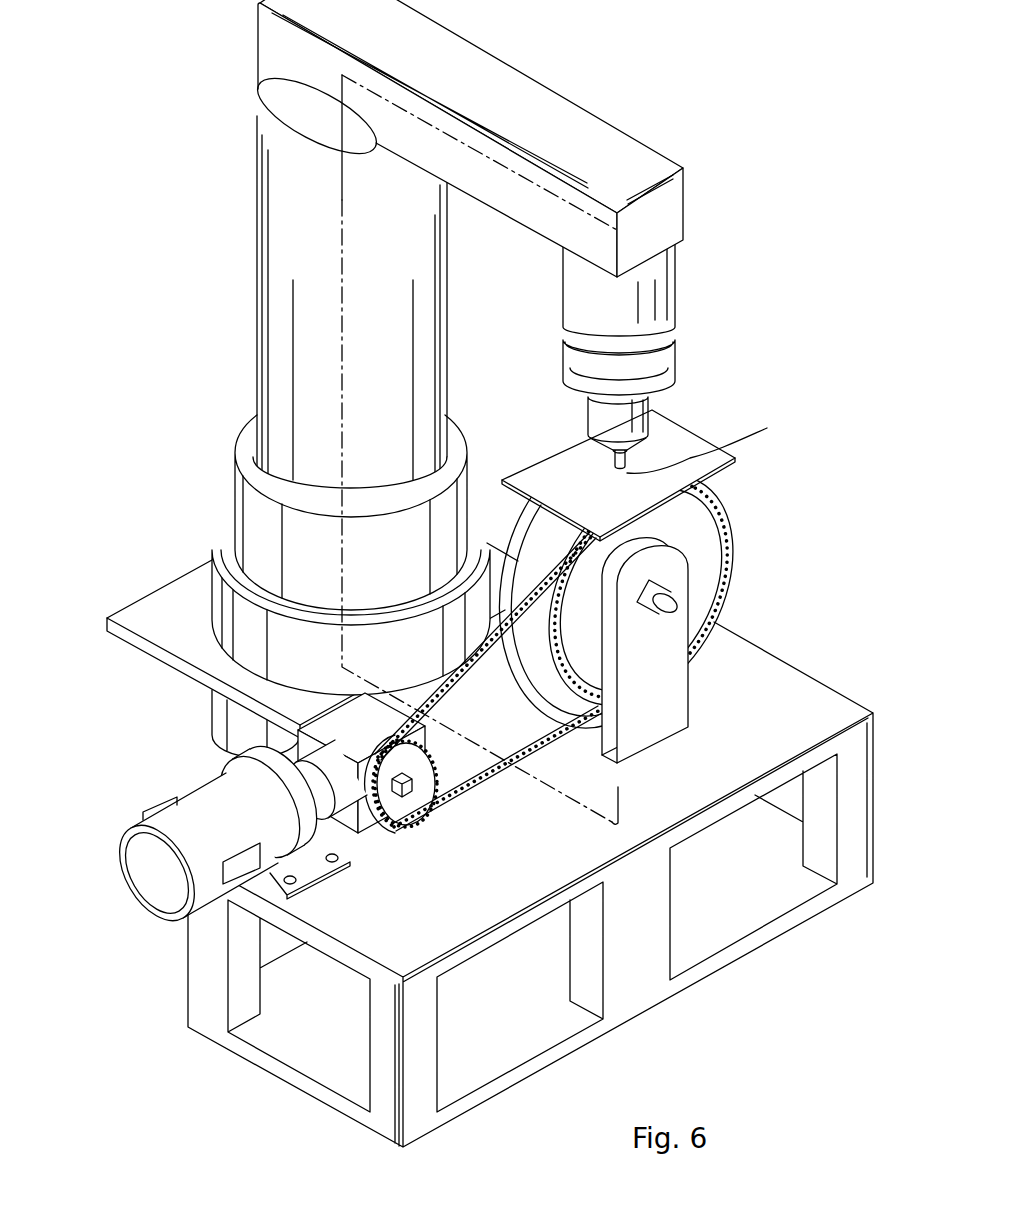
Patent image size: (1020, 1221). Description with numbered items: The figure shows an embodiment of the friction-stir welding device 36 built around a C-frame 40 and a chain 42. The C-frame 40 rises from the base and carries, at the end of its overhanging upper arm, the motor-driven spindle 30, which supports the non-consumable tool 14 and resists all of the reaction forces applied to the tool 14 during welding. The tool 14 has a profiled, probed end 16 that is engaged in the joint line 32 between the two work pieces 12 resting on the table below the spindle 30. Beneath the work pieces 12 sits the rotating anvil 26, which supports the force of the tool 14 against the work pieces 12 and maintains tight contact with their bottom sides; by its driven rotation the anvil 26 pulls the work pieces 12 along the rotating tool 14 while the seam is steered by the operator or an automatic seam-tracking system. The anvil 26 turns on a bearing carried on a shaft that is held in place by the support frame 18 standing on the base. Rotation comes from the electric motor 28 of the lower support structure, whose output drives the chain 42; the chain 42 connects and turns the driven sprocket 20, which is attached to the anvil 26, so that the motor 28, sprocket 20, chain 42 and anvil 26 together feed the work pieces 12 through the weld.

The work pieces 12 is at (627, 473).
The non-consumable tool 14 is at (527, 478).
The probed end 16 is at (767, 428).
The support frame 18 is at (673, 572).
The driven sprocket 20 is at (212, 717).
The rotating anvil 26 is at (530, 597).
The electric motor 28 is at (200, 797).
The motor-driven spindle 30 is at (648, 300).
The joint line 32 is at (627, 450).
The friction-stir welding device 36 is at (534, 374).
The C-frame 40 is at (568, 127).
The chain 42 is at (493, 772).